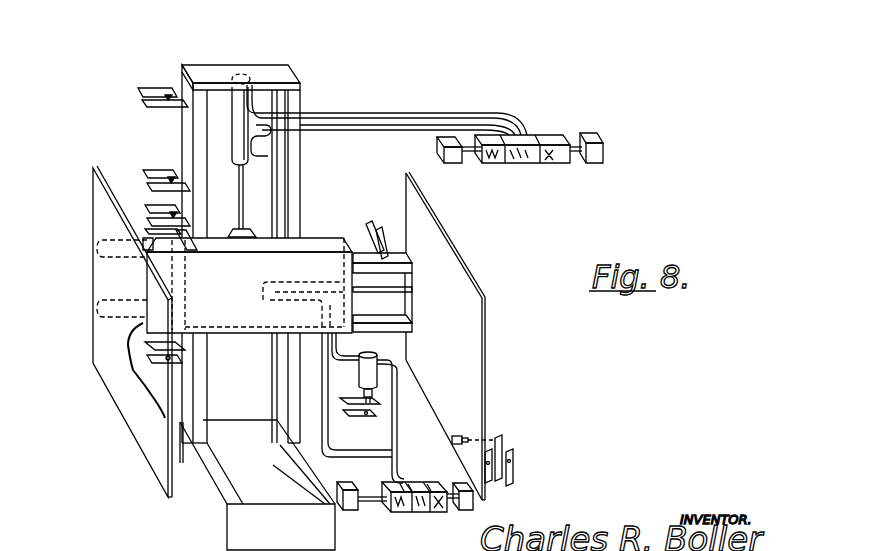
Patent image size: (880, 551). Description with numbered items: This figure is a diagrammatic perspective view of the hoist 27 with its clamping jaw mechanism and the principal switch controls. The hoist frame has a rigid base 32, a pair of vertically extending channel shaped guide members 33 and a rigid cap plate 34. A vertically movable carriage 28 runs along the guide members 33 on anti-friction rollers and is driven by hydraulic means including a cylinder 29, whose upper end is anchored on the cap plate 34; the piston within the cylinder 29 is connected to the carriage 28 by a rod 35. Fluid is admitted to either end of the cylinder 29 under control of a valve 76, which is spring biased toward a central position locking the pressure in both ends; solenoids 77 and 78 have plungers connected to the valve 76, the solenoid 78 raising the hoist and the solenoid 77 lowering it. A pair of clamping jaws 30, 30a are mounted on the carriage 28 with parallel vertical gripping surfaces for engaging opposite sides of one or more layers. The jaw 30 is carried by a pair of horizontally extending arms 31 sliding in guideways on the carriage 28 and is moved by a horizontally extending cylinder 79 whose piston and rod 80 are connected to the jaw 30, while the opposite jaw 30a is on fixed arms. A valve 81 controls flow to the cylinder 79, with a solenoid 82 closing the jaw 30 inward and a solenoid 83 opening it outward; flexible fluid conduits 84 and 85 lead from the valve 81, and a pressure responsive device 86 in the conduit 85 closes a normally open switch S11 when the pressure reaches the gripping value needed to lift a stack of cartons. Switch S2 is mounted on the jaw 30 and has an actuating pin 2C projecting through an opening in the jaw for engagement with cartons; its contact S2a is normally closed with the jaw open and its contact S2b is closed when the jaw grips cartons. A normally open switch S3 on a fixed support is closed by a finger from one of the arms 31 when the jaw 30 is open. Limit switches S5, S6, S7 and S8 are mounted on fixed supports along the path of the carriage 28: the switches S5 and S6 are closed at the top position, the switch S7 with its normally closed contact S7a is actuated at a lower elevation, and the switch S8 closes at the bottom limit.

The hoist 27 is at (243, 231).
The cap plate 34 is at (211, 63).
The guide members 33 is at (203, 199).
The cylinder 29 is at (232, 128).
The rod 35 is at (246, 196).
The carriage 28 is at (243, 278).
The cylinder 79 is at (313, 273).
The clamping jaw 30 is at (452, 272).
The clamping jaw 30a is at (96, 205).
The arms 31 is at (398, 256).
The piston and rod 80 is at (404, 294).
The base 32 is at (215, 514).
The valve 76 is at (531, 142).
The solenoid 77 is at (453, 165).
The solenoid 78 is at (601, 160).
The fluid conduit 85 is at (350, 364).
The fluid conduit 84 is at (330, 433).
The cylinder 86 is at (380, 354).
The valve 81 is at (400, 511).
The solenoid 82 is at (349, 487).
The solenoid 83 is at (474, 505).
The actuating pin 2C is at (468, 438).
The switch S2 is at (500, 440).
The contact S2a is at (493, 482).
The contact S2b is at (514, 468).
The switch S3 is at (381, 222).
The switch S5 is at (138, 93).
The switch S6 is at (153, 170).
The switch S7 is at (150, 206).
The contact S7a is at (145, 231).
The switch S8 is at (147, 356).
The switch S11 is at (376, 413).